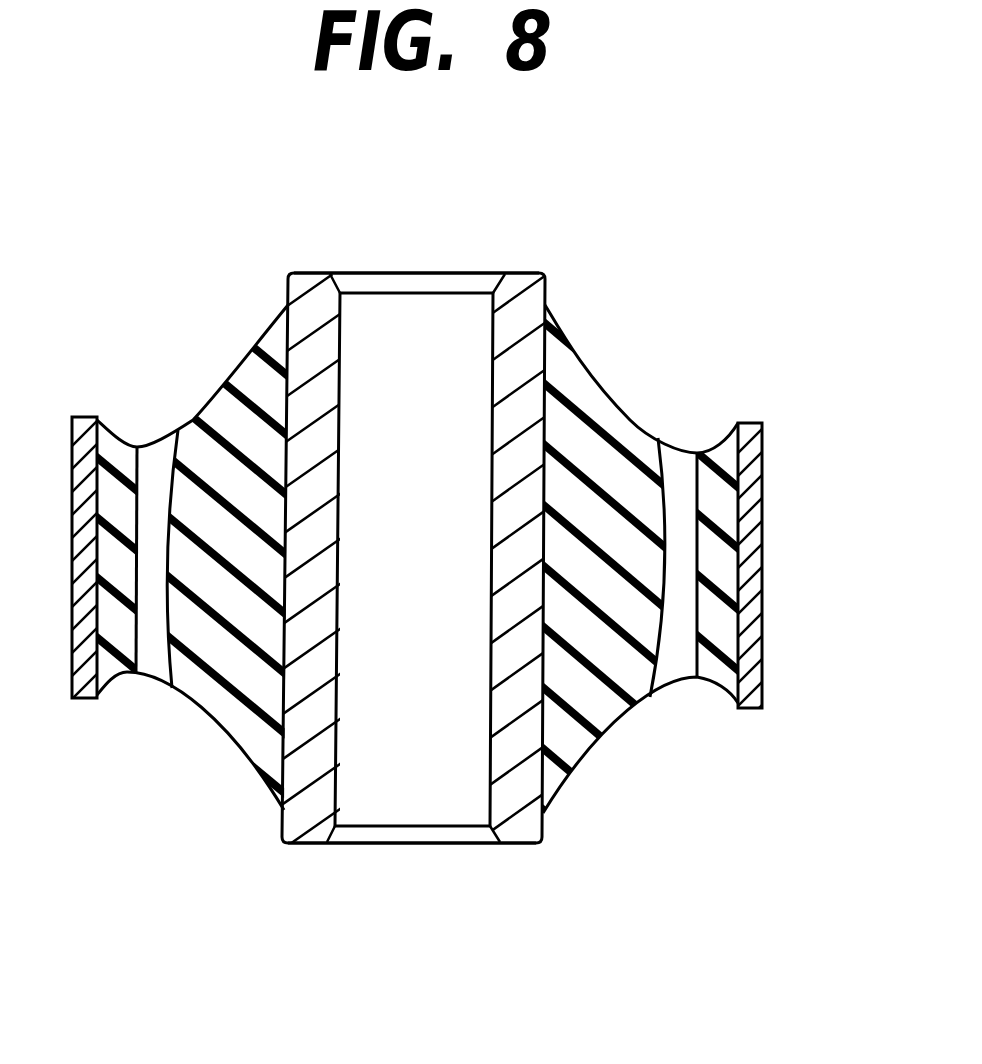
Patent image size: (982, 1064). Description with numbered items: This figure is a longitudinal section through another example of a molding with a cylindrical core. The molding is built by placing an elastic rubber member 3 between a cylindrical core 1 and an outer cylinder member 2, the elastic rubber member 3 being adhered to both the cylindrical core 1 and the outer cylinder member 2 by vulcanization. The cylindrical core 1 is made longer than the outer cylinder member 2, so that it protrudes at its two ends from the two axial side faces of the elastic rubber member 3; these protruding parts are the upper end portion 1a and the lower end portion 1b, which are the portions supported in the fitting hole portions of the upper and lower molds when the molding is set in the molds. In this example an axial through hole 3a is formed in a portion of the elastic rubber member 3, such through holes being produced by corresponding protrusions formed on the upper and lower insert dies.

The cylindrical core 1 is at (545, 281).
The upper end portion 1a is at (305, 283).
The lower end portion 1b is at (523, 845).
The outer cylinder member 2 is at (760, 612).
The elastic rubber member 3 is at (588, 443).
The axial through hole 3a is at (150, 638).